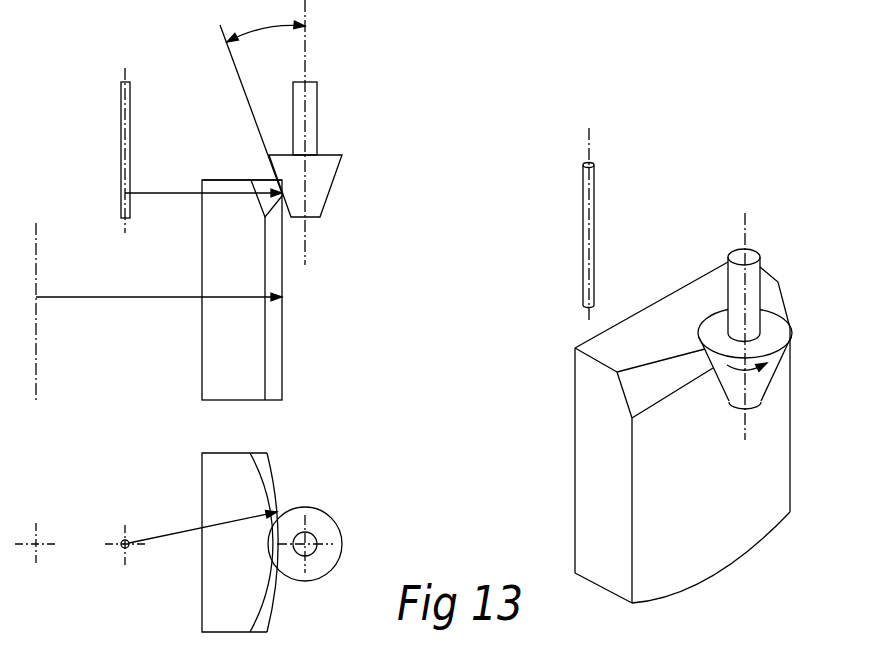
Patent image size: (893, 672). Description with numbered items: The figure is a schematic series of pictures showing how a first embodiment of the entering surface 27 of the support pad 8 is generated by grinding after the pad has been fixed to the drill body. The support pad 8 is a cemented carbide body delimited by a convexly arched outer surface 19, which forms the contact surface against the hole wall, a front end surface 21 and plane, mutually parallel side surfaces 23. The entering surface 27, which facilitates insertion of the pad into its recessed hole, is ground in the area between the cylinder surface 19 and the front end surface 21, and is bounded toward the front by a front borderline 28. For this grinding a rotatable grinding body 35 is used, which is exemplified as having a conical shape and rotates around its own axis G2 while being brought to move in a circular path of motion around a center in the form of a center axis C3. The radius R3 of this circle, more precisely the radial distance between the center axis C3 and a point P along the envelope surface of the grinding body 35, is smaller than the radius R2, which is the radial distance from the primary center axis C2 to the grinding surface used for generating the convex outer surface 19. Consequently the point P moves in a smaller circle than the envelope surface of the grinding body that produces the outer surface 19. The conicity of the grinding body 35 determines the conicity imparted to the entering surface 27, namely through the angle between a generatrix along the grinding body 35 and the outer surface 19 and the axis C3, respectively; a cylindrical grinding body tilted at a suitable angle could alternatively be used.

The support pad 8 is at (292, 349).
The outer surface 19 is at (713, 500).
The front end surface 21 is at (222, 178).
The side surface 23 is at (616, 489).
The entering surface 27 is at (267, 190).
The front borderline 28 is at (682, 357).
The grinding body 35 is at (340, 143).
The point along the envelope surface P is at (281, 193).
The rotation axis of the grinding body G2 is at (307, 247).
The primary center axis C2 is at (36, 378).
The center axis C3 is at (354, 303).
The radius R2 is at (159, 285).
The radius R3 is at (203, 355).